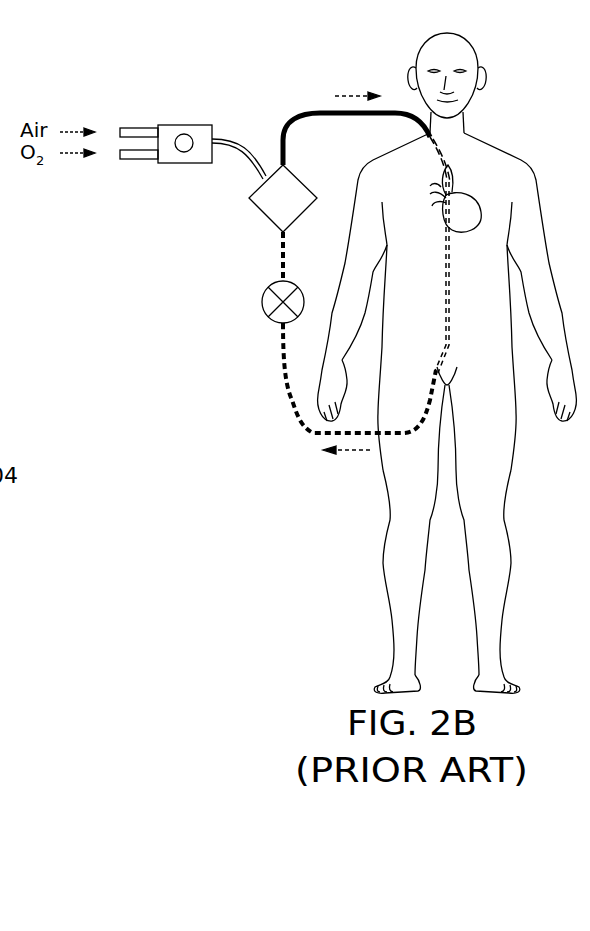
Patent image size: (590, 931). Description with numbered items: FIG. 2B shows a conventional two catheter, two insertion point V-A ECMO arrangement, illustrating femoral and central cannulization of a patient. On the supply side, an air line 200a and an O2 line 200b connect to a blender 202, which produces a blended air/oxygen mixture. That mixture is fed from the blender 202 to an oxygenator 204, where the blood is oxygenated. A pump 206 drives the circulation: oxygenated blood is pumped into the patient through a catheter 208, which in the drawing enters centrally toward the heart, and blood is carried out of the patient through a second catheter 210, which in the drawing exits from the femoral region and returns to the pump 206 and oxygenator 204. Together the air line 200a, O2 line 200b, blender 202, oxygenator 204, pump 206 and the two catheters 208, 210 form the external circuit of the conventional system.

The air line 200a is at (135, 127).
The O2 line 200b is at (135, 159).
The blender 202 is at (184, 125).
The oxygenator 204 is at (250, 200).
The pump 206 is at (264, 307).
The catheter 208 is at (315, 113).
The catheter 210 is at (307, 437).